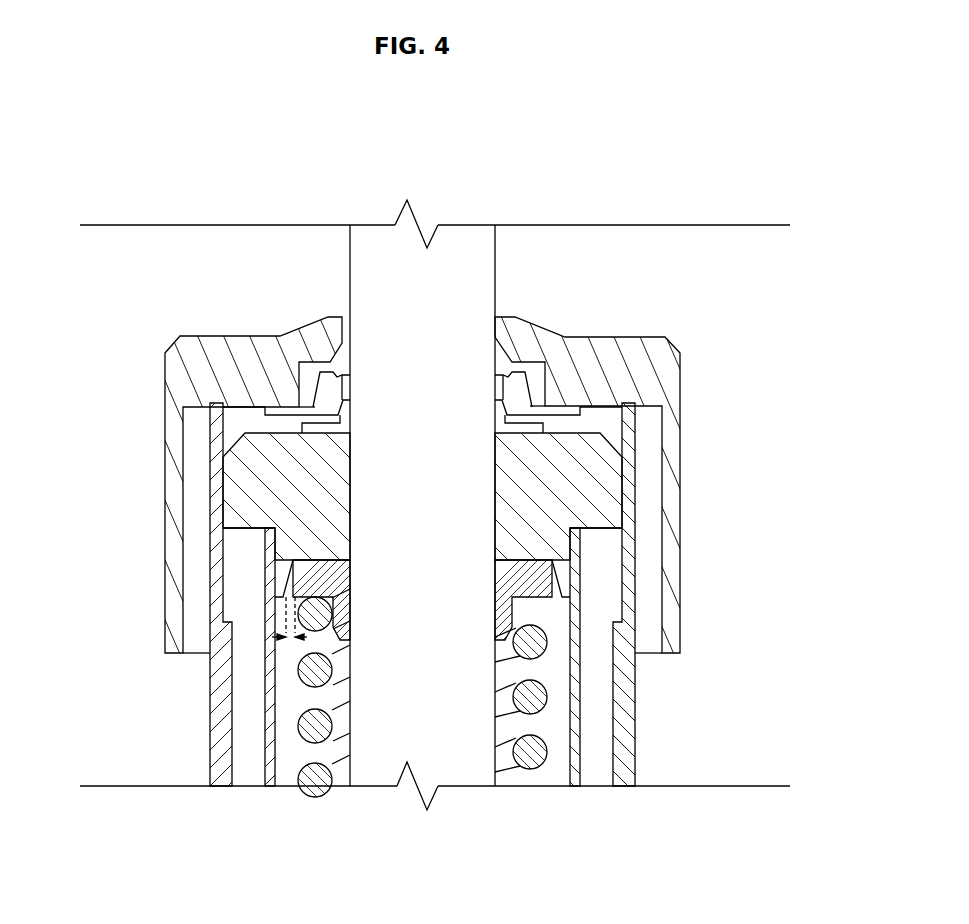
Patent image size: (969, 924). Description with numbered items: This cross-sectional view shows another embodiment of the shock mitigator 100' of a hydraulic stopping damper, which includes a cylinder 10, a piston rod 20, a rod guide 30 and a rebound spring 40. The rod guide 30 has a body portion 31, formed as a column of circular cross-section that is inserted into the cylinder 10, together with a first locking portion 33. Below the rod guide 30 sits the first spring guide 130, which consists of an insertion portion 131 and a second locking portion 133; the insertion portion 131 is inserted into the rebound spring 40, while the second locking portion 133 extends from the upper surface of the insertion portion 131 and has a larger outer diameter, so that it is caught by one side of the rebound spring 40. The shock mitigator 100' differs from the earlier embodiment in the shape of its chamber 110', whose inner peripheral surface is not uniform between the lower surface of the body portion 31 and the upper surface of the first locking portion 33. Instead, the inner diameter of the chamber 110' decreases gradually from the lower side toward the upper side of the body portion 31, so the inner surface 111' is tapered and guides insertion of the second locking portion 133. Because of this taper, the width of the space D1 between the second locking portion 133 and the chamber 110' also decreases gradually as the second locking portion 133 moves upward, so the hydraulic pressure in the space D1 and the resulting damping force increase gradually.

The piston rod 20 is at (466, 245).
The cylinder 10 is at (624, 751).
The rod guide 30 is at (614, 446).
The first locking portion 33 is at (603, 489).
The body portion 31 is at (563, 567).
The inner surface 111' is at (188, 578).
The chamber 110' is at (498, 600).
The shock mitigator 100' is at (659, 633).
The second locking portion 133 is at (300, 642).
The insertion portion 131 is at (349, 622).
The first spring guide 130 is at (307, 870).
The rebound spring 40 is at (530, 758).
The space D1 is at (291, 638).